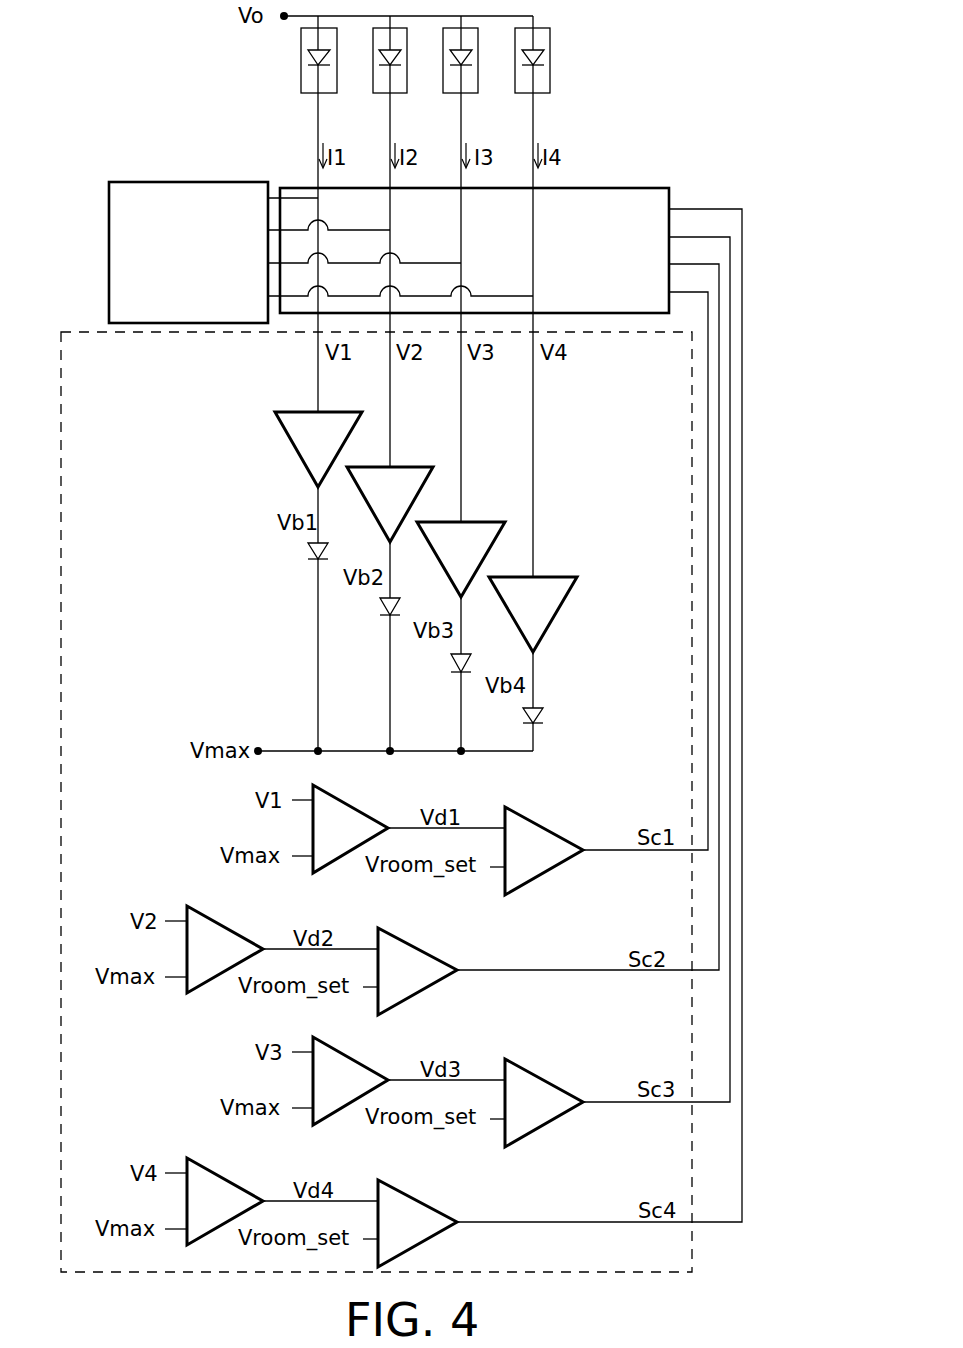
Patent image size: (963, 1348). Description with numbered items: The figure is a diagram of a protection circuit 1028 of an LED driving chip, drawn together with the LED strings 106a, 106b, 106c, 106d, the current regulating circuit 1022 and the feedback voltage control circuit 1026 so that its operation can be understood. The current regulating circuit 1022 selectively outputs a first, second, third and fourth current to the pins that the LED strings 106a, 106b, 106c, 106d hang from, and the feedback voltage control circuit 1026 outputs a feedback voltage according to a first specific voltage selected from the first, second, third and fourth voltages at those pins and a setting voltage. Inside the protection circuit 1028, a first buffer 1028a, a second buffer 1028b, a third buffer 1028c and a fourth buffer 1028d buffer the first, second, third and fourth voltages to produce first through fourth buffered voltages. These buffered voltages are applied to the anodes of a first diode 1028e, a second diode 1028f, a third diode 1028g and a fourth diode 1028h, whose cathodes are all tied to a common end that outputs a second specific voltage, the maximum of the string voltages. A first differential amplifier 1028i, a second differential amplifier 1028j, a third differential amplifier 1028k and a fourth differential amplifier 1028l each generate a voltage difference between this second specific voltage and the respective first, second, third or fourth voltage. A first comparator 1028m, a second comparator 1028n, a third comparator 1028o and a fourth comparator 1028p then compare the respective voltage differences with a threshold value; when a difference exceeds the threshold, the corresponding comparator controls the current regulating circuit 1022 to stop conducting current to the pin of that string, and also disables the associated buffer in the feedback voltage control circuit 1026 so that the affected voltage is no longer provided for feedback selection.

The LED string 106a is at (330, 93).
The LED string 106b is at (400, 93).
The LED string 106c is at (471, 93).
The LED string 106d is at (543, 93).
The feedback voltage control circuit 1026 is at (196, 182).
The current regulating circuit 1022 is at (640, 178).
The protection circuit 1028 is at (61, 415).
The first buffer 1028a is at (358, 399).
The second buffer 1028b is at (430, 454).
The third buffer 1028c is at (501, 509).
The fourth buffer 1028d is at (573, 564).
The first diode 1028e is at (308, 552).
The second diode 1028f is at (380, 607).
The third diode 1028g is at (451, 664).
The fourth diode 1028h is at (523, 716).
The first differential amplifier 1028i is at (335, 797).
The second differential amplifier 1028j is at (209, 918).
The third differential amplifier 1028k is at (335, 1049).
The fourth differential amplifier 1028l is at (209, 1170).
The first comparator 1028m is at (545, 808).
The second comparator 1028n is at (418, 929).
The third comparator 1028o is at (545, 1060).
The fourth comparator 1028p is at (418, 1181).